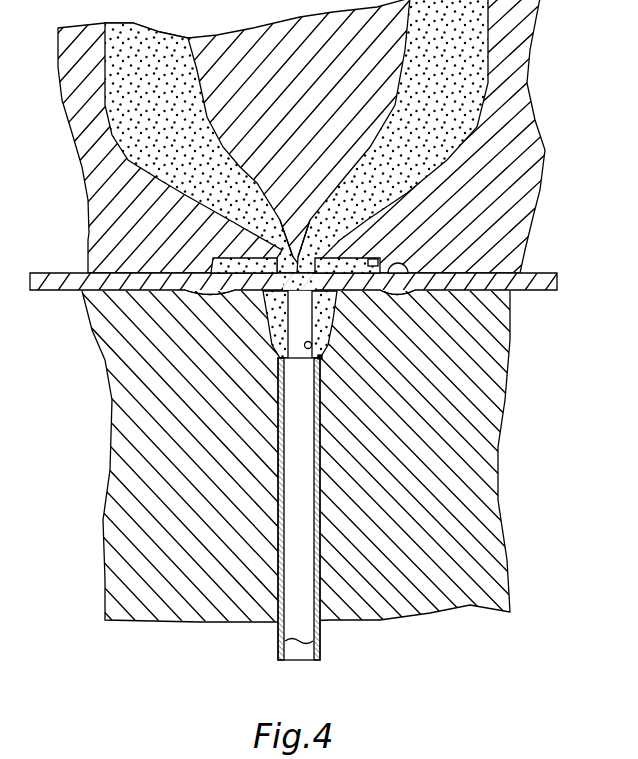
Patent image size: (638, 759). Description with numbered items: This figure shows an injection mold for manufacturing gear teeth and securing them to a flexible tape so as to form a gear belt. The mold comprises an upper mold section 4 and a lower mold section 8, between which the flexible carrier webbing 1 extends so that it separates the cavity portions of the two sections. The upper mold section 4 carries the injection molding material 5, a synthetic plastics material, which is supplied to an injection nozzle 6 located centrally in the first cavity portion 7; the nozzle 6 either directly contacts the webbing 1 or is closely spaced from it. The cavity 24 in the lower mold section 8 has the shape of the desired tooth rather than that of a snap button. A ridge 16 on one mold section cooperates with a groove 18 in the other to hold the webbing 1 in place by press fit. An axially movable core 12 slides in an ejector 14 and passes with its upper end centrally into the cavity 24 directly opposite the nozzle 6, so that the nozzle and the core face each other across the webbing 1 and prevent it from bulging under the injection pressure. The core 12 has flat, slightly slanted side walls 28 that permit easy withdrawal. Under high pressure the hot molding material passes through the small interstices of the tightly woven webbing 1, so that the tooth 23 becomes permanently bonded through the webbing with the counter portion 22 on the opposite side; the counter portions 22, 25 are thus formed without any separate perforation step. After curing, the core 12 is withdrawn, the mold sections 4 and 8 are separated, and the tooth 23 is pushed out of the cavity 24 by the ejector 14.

The webbing 1 is at (486, 272).
The upper mold section 4 is at (97, 168).
The injection molding material 5 is at (123, 78).
The injection nozzle 6 is at (296, 263).
The first cavity portion 7 is at (399, 248).
The lower mold section 8 is at (107, 478).
The core 12 is at (298, 328).
The ejector 14 is at (317, 500).
The ridge 16 is at (413, 296).
The groove 18 is at (197, 297).
The counter portion 22 is at (240, 260).
The tooth 23 is at (275, 312).
The cavity 24 is at (333, 323).
The right sealing block 25 is at (352, 246).
The slanted side walls 28 is at (322, 355).